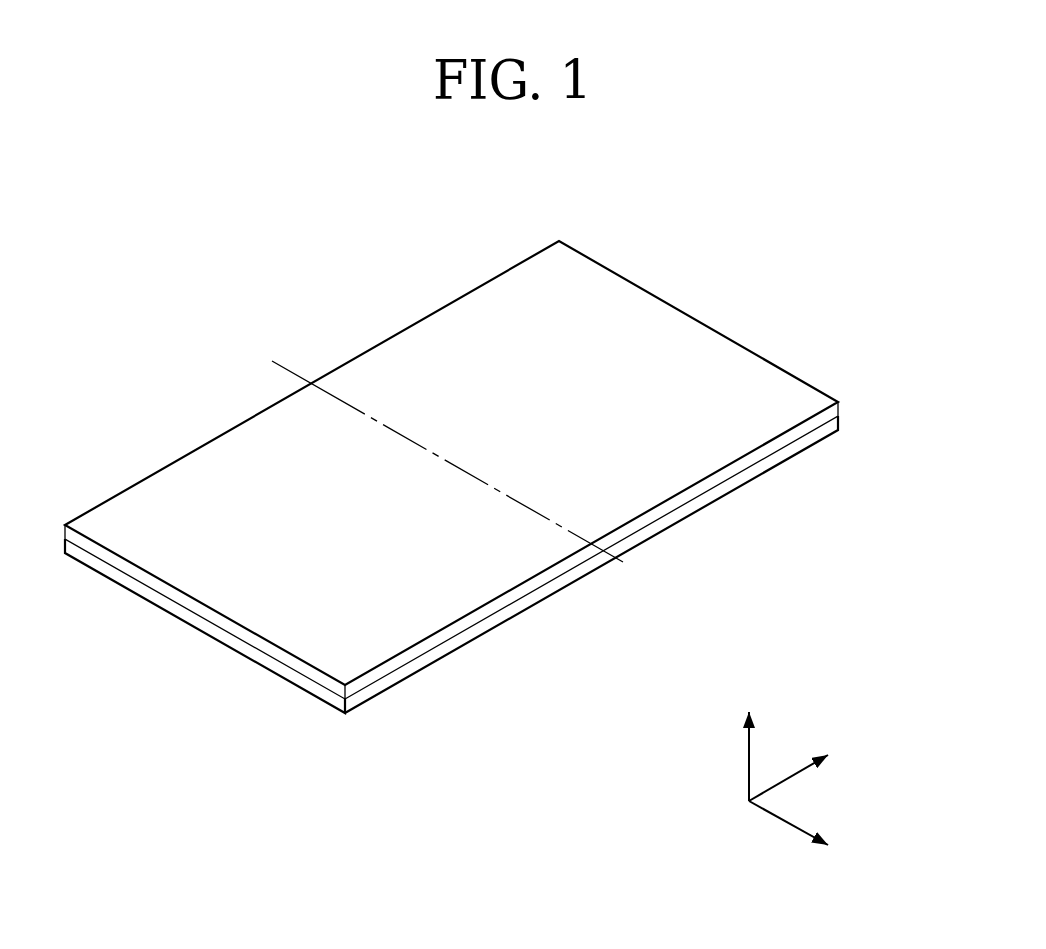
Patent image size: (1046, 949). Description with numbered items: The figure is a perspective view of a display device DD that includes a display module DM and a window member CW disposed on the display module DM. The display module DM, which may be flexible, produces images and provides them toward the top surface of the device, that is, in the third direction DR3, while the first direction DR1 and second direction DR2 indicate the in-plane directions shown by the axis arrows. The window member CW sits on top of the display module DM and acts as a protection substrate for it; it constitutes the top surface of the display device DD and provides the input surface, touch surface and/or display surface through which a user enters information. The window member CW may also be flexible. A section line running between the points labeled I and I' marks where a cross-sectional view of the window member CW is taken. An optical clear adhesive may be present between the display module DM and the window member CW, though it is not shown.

The display device DD is at (500, 438).
The window member CW is at (829, 414).
The display module DM is at (829, 426).
The line I-I' (section line end) I is at (246, 379).
The line I-I' (section line end) I' is at (628, 600).
The first direction DR1 is at (811, 835).
The second direction DR2 is at (809, 768).
The third direction DR3 is at (751, 742).